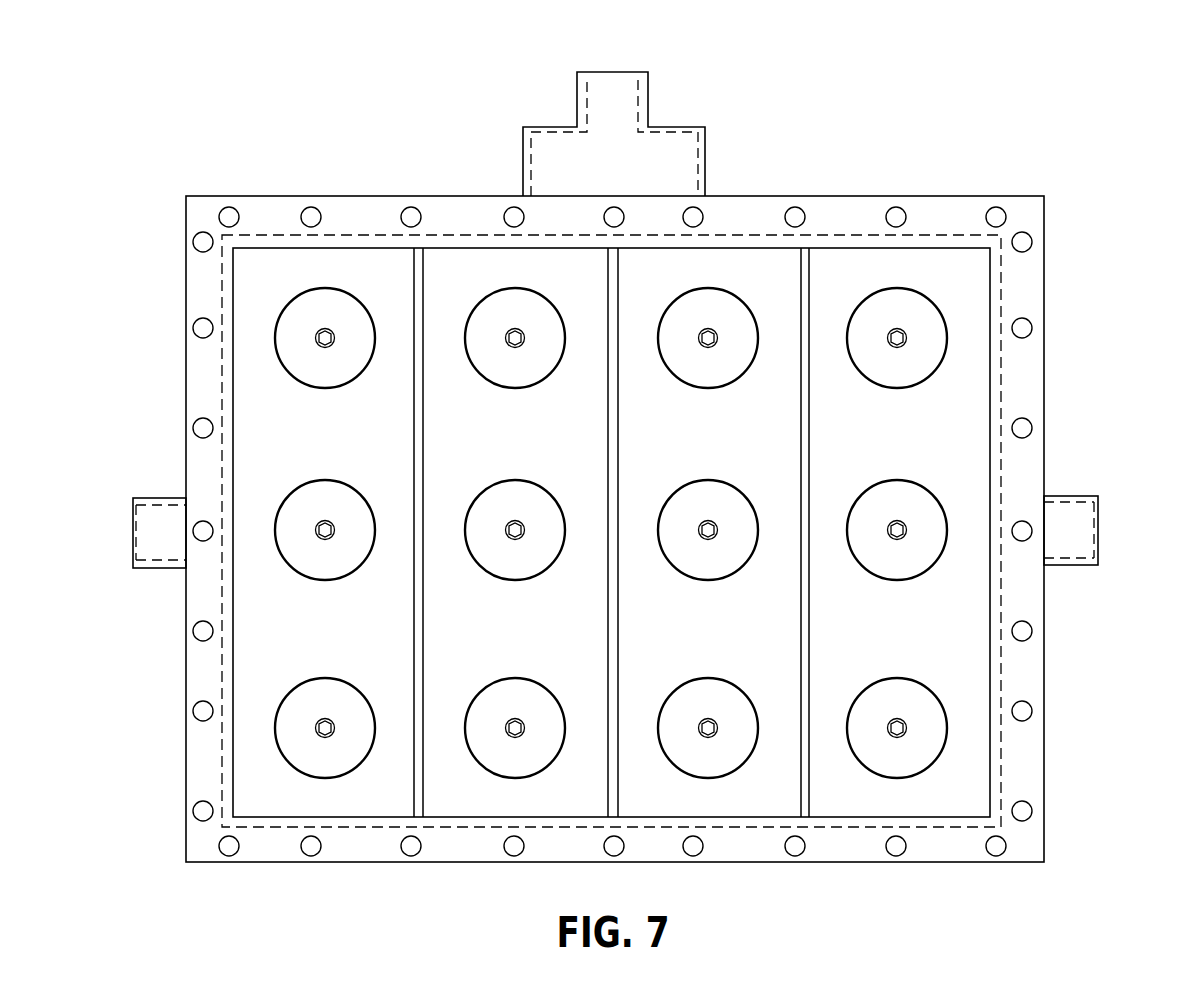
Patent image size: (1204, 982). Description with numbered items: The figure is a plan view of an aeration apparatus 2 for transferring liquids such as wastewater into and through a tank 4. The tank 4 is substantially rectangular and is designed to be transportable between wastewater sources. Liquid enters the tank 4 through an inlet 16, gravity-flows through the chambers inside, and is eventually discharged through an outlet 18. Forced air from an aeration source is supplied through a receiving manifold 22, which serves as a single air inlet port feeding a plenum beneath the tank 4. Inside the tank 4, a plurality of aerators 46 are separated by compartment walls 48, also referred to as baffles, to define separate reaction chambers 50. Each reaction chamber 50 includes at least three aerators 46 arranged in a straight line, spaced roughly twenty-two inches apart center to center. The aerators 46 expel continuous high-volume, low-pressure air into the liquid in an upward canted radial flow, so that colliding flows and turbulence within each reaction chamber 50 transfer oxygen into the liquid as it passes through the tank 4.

The aeration apparatus 2 is at (946, 168).
The tank 4 is at (1044, 253).
The inlet 16 is at (149, 568).
The outlet 18 is at (1078, 515).
The receiving manifold 22 is at (649, 97).
The aerator 46 is at (308, 777).
The compartment wall 48 is at (423, 445).
The reaction chamber 50 is at (387, 337).